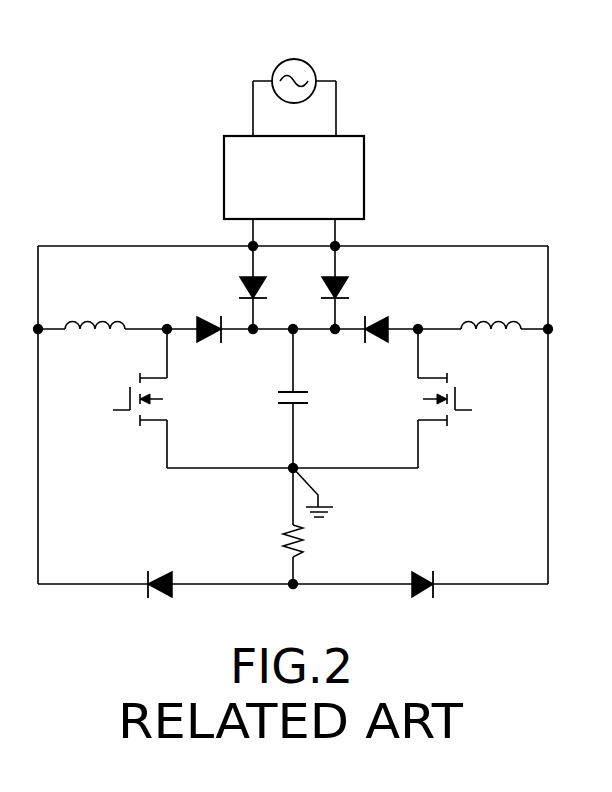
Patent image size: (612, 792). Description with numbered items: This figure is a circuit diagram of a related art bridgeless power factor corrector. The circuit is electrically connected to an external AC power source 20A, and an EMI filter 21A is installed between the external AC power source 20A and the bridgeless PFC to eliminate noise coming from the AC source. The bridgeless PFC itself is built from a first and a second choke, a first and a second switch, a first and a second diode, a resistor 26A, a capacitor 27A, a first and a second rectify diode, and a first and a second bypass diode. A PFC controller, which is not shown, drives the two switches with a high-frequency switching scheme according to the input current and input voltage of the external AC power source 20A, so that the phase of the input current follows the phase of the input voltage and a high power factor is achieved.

The external AC power source 20A is at (294, 84).
The EMI filter 21A is at (358, 177).
The resistor 26A is at (313, 541).
The capacitor 27A is at (314, 397).